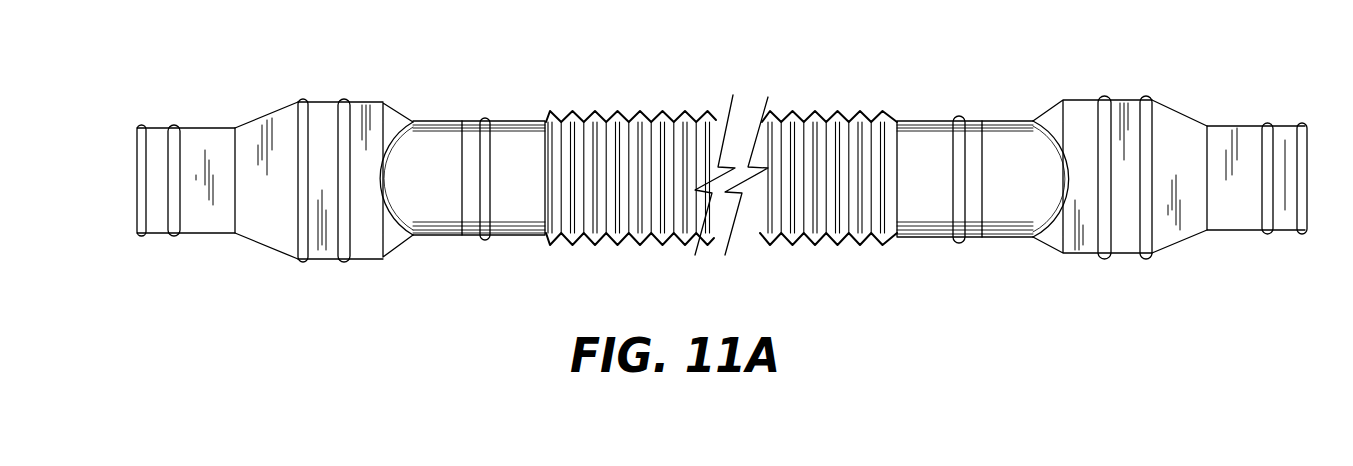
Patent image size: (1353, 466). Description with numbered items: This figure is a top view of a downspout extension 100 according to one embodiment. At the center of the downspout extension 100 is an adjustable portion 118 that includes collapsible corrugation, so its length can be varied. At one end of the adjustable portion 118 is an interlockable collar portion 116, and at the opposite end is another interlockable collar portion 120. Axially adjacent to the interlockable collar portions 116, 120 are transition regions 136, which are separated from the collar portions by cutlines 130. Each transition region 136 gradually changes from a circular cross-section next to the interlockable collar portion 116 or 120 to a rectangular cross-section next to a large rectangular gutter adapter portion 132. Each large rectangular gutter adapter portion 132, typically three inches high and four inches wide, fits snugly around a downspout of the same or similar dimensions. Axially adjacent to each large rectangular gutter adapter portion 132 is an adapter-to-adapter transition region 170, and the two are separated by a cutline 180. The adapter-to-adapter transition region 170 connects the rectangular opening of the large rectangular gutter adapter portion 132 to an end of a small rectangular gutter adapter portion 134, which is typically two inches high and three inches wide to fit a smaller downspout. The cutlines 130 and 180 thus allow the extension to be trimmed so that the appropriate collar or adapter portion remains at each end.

The downspout extension 100 is at (1183, 397).
The interlockable collar portion 116 is at (542, 277).
The adjustable portion 118 is at (893, 88).
The interlockable collar portion 120 is at (893, 277).
The cutlines 130 is at (462, 121).
The large rectangular gutter adapter portion 132 is at (298, 277).
The small rectangular gutter adapter portion 134 is at (137, 277).
The transition regions 136 is at (388, 277).
The adapter-to-adapter transition region 170 is at (238, 277).
The cutline 180 is at (296, 101).